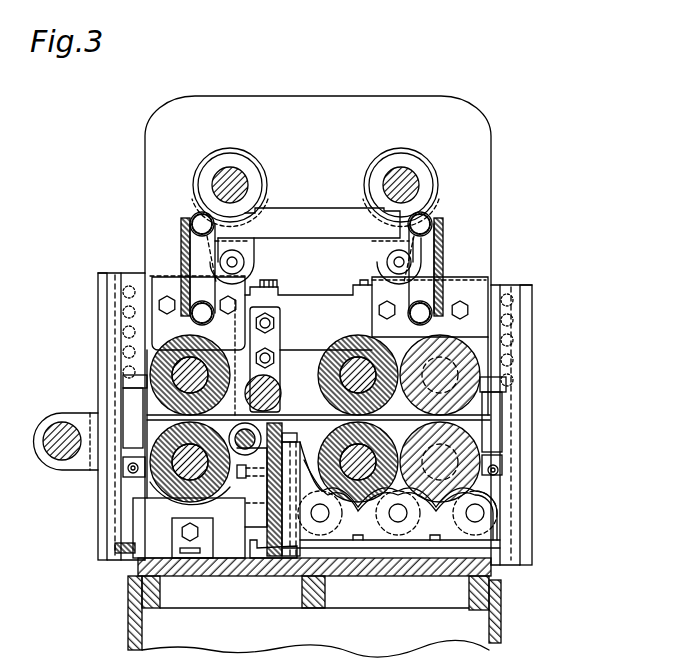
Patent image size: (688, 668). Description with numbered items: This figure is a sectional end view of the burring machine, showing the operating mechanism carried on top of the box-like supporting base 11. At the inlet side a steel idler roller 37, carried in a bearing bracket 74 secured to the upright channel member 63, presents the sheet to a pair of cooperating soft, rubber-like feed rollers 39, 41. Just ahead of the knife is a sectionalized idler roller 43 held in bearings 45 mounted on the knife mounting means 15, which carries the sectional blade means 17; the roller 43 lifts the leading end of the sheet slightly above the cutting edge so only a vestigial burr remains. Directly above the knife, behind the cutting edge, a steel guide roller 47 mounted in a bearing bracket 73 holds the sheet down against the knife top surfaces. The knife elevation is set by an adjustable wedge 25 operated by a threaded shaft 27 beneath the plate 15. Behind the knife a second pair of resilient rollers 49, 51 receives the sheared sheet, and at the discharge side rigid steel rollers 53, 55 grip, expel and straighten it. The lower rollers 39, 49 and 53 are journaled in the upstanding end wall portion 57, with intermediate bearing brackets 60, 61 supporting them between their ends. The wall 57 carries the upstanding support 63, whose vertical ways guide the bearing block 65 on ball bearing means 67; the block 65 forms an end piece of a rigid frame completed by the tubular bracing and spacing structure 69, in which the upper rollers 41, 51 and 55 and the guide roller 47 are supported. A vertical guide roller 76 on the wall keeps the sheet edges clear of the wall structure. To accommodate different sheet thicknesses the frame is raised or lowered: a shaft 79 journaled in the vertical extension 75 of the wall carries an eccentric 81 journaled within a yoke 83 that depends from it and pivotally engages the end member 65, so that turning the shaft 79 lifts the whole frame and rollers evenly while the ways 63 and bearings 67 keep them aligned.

The supporting base 11 is at (502, 617).
The knife mounting means 15 is at (285, 451).
The blade means 17 is at (274, 424).
The adjustable wedge 25 is at (262, 562).
The threaded shaft 27 is at (245, 562).
The idler roller 37 is at (50, 430).
The lower feed roller 39 is at (152, 487).
The upper feed roller 41 is at (165, 368).
The sectionalized idler roller 43 is at (241, 424).
The bearing 45 is at (251, 458).
The guide roller means 47 is at (276, 385).
The lower rear roller 49 is at (368, 500).
The upper rear roller 51 is at (355, 338).
The lower steel roller 53 is at (481, 460).
The upper steel roller 55 is at (460, 344).
The end wall portion 57 is at (497, 490).
The intermediate bearing bracket 60 is at (484, 528).
The intermediate bearing bracket 61 is at (152, 538).
The upstanding support 63 is at (104, 307).
The bearing block 65 is at (318, 387).
The ball bearing means 67 is at (114, 292).
The tubular bracing and spacing structure 69 is at (198, 258).
The bearing bracket 73 is at (280, 341).
The bearing bracket 74 is at (70, 466).
The vertical extension 75 is at (487, 132).
The vertical guide roller 76 is at (128, 407).
The shaft 79 is at (234, 178).
The eccentric 81 is at (262, 185).
The yoke 83 is at (275, 222).